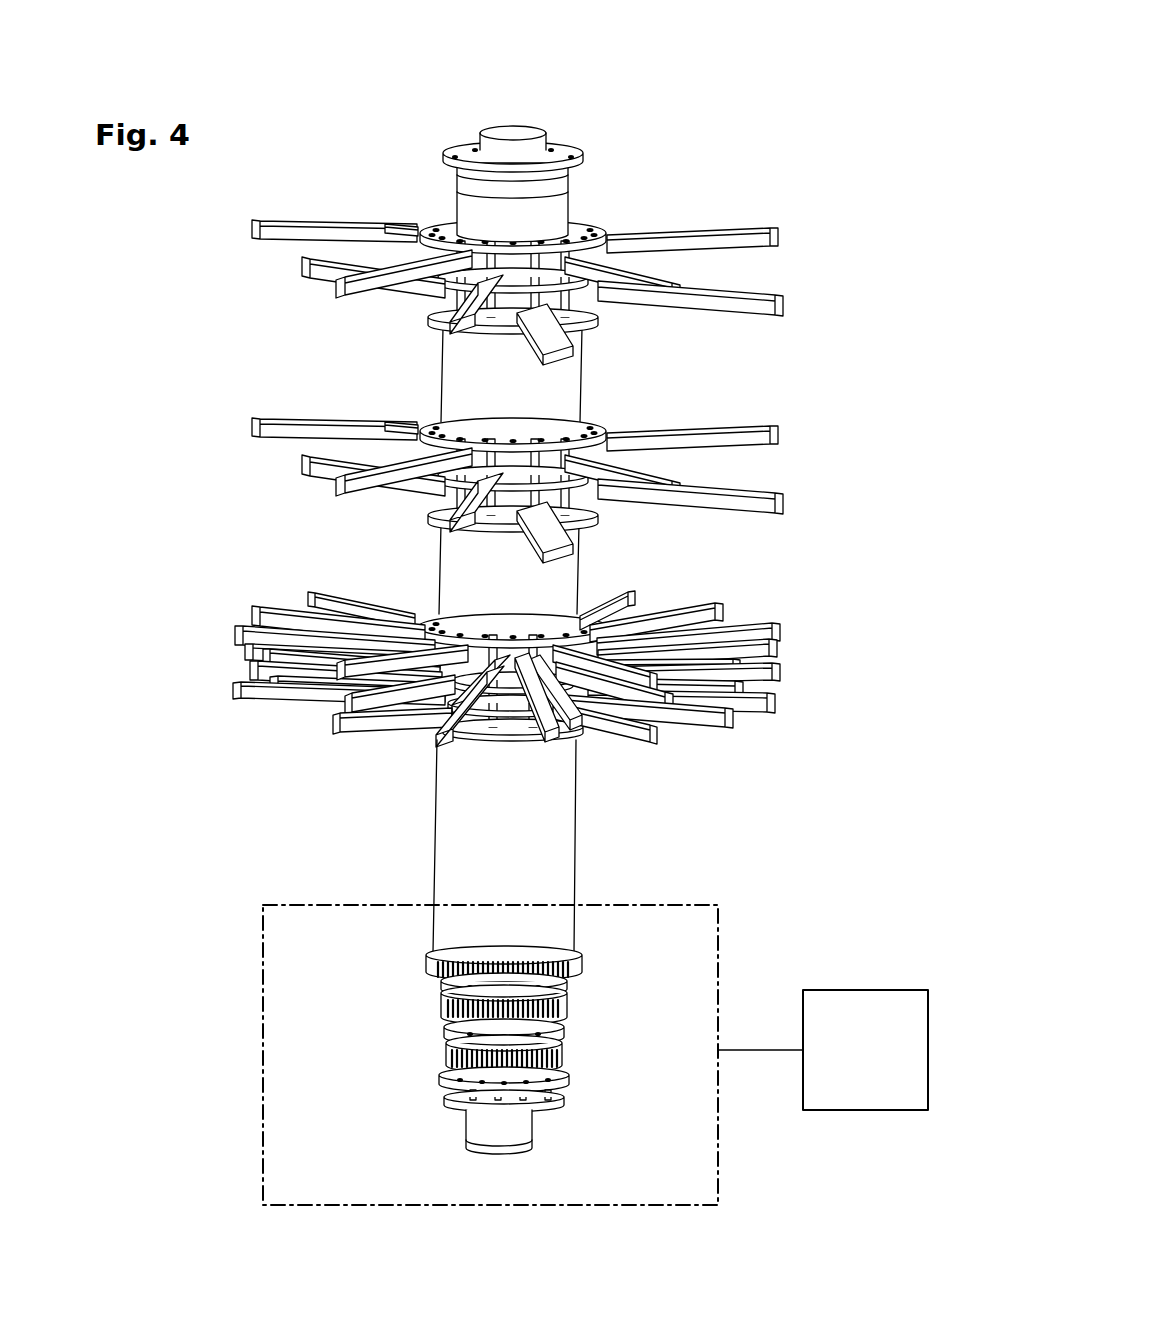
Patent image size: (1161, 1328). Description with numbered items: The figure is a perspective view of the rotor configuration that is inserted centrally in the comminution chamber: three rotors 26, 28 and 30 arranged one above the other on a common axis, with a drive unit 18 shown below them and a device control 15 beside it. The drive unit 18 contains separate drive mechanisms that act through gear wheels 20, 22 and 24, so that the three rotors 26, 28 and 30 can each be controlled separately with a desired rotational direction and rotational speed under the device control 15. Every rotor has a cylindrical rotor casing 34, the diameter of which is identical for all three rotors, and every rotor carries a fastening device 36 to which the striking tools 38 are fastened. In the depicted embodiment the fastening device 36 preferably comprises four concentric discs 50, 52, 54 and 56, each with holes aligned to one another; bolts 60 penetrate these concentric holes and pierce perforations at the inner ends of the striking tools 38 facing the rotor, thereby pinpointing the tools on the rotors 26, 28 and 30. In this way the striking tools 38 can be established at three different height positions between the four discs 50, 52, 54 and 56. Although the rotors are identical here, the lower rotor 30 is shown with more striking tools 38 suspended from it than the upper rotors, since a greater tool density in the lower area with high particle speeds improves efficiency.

The device control 15 is at (860, 1075).
The drive unit 18 is at (682, 995).
The gear wheel 20 is at (430, 953).
The gear wheel 22 is at (442, 1008).
The gear wheel 24 is at (443, 1057).
The rotor 26 is at (418, 205).
The rotor 28 is at (348, 405).
The rotor 30 is at (342, 577).
The cylindrical rotor casing 34 is at (548, 402).
The fastening device 36 is at (607, 223).
The striking tools 38 is at (657, 247).
The disc 50 is at (423, 232).
The disc 52 is at (512, 273).
The disc 54 is at (558, 293).
The disc 56 is at (592, 330).
The bolts 60 is at (525, 263).